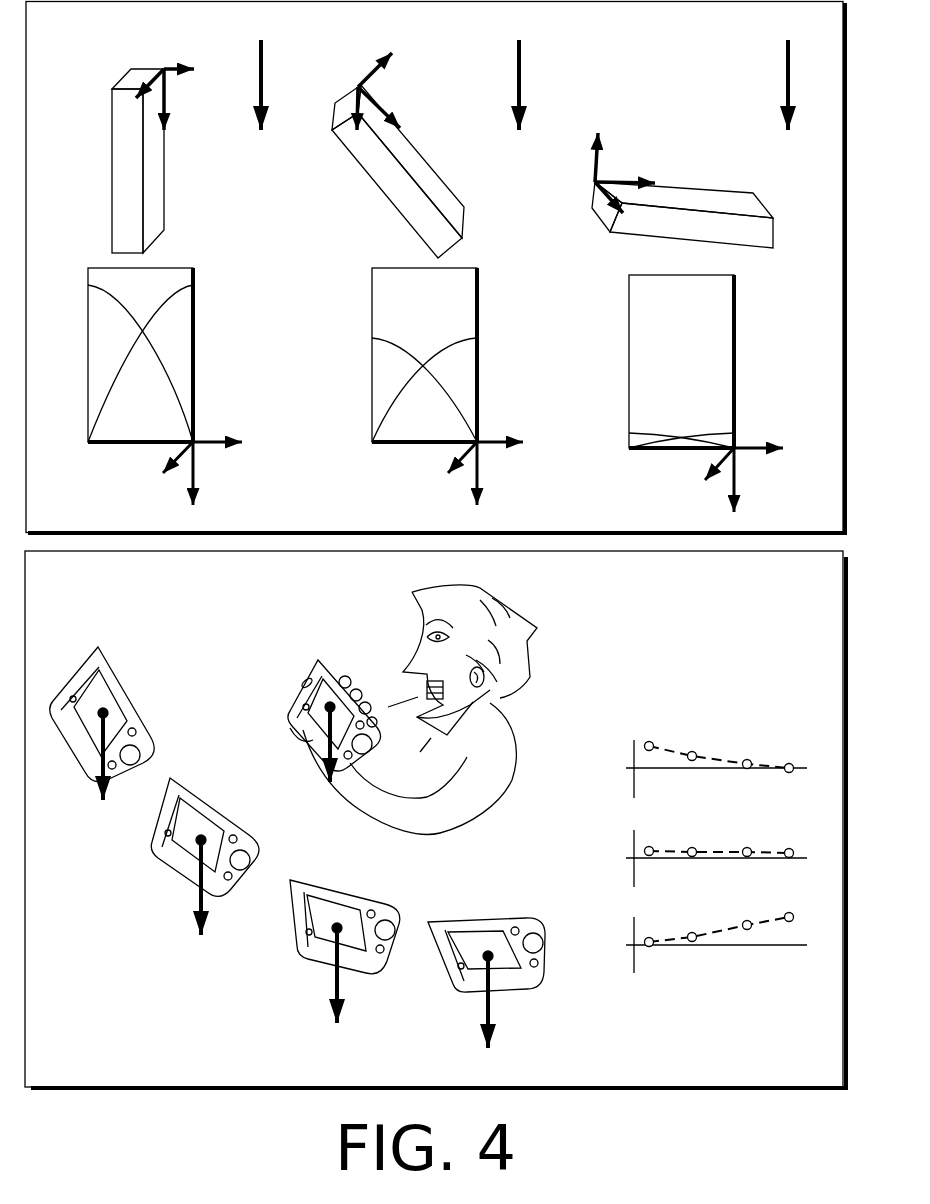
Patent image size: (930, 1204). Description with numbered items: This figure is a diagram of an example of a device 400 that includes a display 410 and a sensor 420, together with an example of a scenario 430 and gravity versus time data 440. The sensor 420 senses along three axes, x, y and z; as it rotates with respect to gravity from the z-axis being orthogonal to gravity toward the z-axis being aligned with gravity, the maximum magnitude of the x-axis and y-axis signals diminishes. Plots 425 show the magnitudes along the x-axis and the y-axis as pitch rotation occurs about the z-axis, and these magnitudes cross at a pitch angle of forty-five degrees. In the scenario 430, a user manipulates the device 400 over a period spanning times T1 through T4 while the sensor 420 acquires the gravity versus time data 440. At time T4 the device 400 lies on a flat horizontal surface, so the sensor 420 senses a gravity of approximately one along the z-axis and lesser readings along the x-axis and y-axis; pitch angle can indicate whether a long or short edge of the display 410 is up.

The device 400 is at (135, 692).
The display 410 is at (327, 688).
The sensor 420 is at (148, 162).
The plots 425 is at (98, 480).
The scenario 430 is at (182, 594).
The gravity versus time data 440 is at (729, 731).